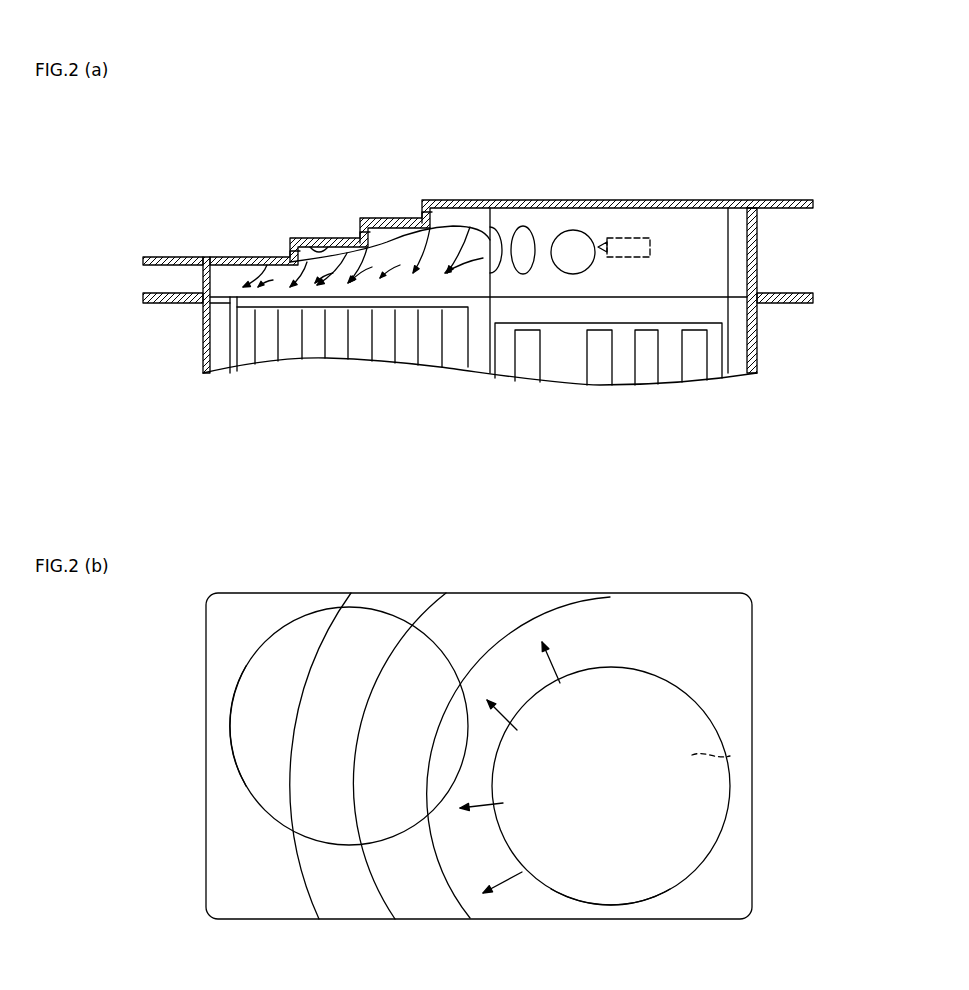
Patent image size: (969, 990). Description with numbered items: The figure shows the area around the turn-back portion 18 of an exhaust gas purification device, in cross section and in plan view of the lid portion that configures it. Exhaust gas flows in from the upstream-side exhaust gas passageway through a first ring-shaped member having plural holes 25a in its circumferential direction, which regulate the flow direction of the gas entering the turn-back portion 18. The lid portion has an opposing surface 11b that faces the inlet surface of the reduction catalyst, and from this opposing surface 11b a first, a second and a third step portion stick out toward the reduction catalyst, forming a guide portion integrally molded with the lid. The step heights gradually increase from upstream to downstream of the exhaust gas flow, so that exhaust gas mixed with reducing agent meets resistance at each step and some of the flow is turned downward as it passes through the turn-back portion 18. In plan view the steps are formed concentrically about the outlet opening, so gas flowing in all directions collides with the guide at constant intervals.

The opposing surface 11b is at (320, 248).
The turn-back portion 18 is at (472, 222).
The holes 25a is at (572, 235).